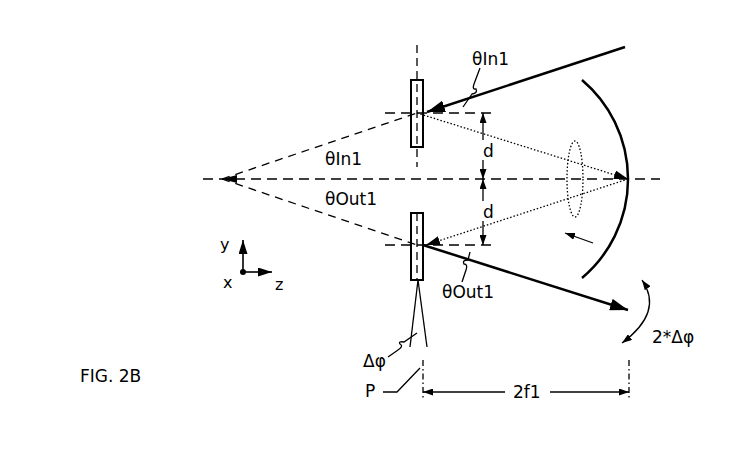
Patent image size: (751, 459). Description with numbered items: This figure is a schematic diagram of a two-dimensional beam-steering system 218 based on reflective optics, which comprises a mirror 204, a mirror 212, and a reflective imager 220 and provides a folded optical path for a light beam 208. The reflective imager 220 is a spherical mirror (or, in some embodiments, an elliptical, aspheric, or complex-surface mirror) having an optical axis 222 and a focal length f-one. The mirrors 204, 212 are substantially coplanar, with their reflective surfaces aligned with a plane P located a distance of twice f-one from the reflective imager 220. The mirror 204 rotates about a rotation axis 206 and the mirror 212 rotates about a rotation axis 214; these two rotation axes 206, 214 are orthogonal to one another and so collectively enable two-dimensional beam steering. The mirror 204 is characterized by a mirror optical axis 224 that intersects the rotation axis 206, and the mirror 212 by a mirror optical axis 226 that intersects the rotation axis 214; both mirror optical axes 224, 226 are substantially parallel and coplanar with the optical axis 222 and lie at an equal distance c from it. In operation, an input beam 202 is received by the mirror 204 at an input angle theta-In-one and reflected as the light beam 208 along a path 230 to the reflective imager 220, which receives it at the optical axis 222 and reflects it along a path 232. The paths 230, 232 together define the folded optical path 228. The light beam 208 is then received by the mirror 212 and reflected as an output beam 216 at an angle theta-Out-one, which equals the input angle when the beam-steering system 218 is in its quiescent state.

The input beam 202 is at (600, 50).
The mirror 204 is at (410, 87).
The rotation axis 206 is at (417, 60).
The light beam 208 is at (577, 143).
The mirror 212 is at (415, 280).
The rotation axis 214 is at (415, 247).
The output beam 216 is at (563, 290).
The beam-steering system 218 is at (290, 53).
The reflective imager 220 is at (610, 93).
The optical axis 222 is at (657, 178).
The mirror optical axis 224 is at (390, 113).
The mirror optical axis 226 is at (390, 247).
The folded optical path 228 is at (593, 243).
The path 230 is at (587, 168).
The path 232 is at (587, 193).